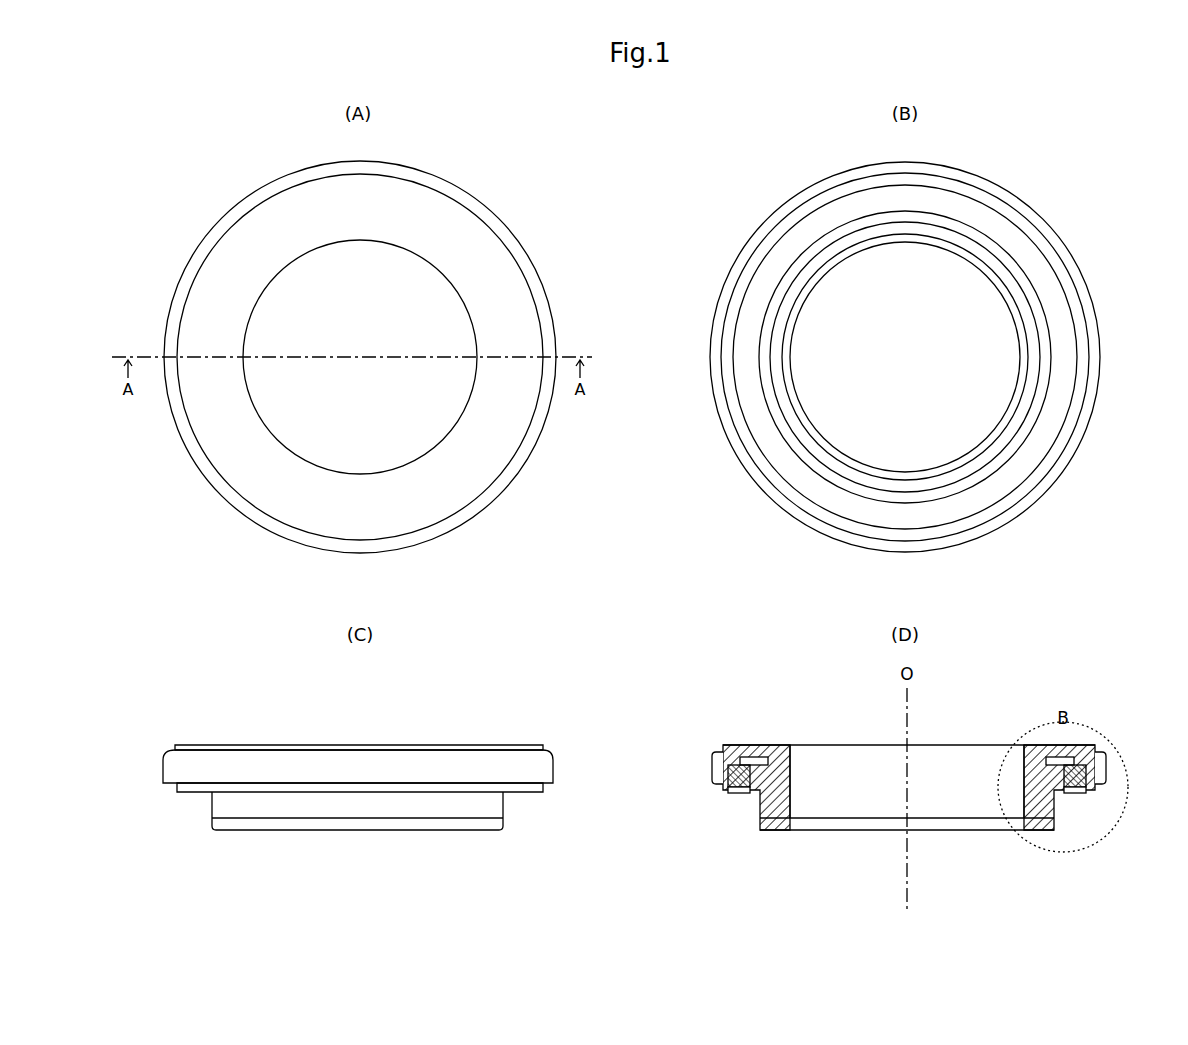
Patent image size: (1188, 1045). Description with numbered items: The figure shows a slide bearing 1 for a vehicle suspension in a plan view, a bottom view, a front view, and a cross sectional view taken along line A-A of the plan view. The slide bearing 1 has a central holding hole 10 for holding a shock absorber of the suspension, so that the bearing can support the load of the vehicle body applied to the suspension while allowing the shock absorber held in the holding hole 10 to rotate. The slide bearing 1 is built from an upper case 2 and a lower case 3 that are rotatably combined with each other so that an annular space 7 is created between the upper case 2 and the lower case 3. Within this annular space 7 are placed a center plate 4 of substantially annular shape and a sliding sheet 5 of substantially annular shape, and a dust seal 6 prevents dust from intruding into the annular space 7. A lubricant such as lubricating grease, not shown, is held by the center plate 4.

The slide bearing 1 is at (546, 149).
The upper case 2 is at (405, 207).
The lower case 3 is at (953, 207).
The center plate 4 is at (740, 790).
The sliding sheet 5 is at (755, 760).
The dust seal 6 is at (735, 792).
The annular space 7 is at (715, 760).
The holding hole 10 is at (441, 321).